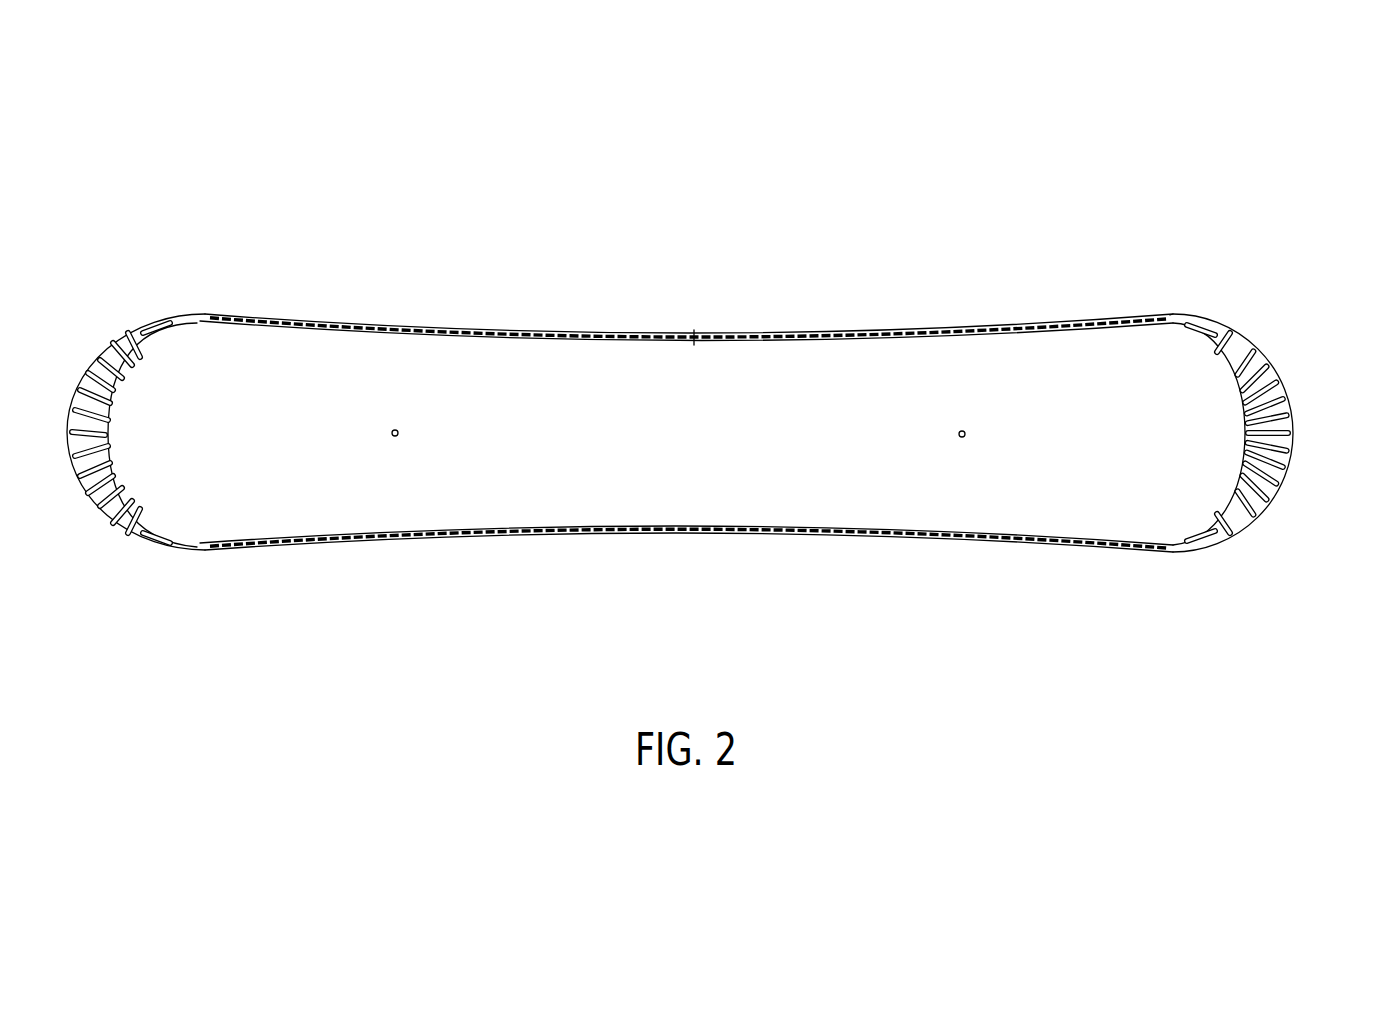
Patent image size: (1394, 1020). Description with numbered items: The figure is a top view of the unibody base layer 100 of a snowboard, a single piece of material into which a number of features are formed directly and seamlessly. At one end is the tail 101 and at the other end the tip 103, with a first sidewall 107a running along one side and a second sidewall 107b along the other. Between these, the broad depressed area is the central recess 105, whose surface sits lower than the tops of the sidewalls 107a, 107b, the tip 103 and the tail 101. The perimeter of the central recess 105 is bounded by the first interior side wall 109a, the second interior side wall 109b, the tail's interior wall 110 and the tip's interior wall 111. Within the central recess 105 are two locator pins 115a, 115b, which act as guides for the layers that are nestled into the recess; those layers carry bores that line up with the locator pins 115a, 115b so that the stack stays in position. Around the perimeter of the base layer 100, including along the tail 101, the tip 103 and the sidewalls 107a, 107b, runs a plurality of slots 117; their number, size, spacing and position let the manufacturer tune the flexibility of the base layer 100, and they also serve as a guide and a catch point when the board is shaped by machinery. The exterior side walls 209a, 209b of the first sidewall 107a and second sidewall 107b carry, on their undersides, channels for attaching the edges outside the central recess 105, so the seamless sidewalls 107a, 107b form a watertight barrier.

The unibody base layer 100 is at (709, 370).
The tail 101 is at (73, 403).
The tip 103 is at (1290, 440).
The central recess 105 is at (694, 447).
The first sidewall 107a is at (570, 530).
The second sidewall 107b is at (738, 334).
The first interior side wall 109a is at (662, 528).
The second interior side wall 109b is at (980, 328).
The tail's interior wall 110 is at (110, 447).
The tip's interior wall 111 is at (1245, 430).
The locator pin 115a is at (396, 430).
The locator pin 115b is at (964, 431).
The slots 117 is at (1255, 507).
The exterior side wall 209a is at (808, 530).
The exterior side wall 209b is at (609, 332).